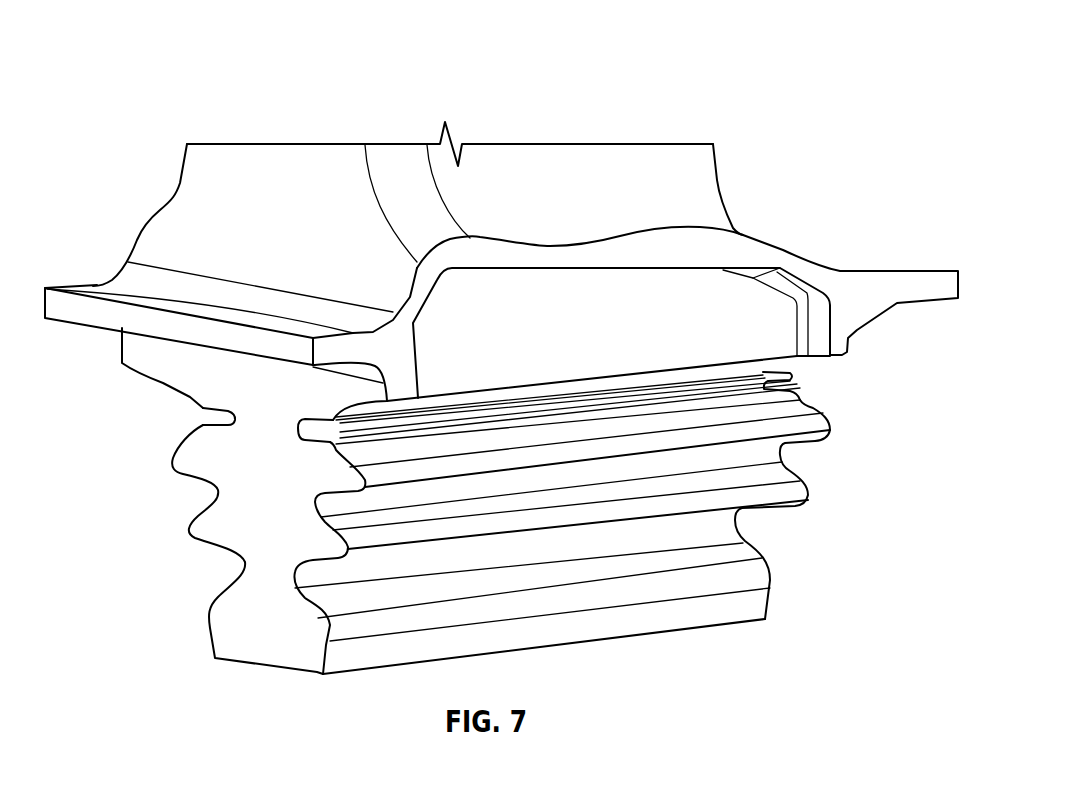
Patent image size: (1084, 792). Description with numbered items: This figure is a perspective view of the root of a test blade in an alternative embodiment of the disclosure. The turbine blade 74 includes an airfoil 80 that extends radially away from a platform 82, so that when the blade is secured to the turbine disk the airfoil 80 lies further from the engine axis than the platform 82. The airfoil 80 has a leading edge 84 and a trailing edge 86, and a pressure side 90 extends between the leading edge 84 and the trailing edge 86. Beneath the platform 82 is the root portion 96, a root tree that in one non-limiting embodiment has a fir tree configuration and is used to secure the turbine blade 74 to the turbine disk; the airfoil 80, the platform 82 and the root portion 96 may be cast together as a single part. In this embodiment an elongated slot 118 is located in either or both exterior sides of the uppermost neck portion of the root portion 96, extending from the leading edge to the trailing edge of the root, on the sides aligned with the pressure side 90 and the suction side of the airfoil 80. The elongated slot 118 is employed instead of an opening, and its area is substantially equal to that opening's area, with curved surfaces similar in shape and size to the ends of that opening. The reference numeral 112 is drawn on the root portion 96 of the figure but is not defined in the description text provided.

The turbine blade 74 is at (738, 42).
The airfoil 80 is at (583, 172).
The platform 82 is at (127, 311).
The leading edge 84 is at (180, 172).
The trailing edge 86 is at (722, 182).
The pressure side 90 is at (482, 172).
The root portion 96 is at (236, 527).
The root serrations 112 is at (680, 442).
The elongated slot 118 is at (203, 424).